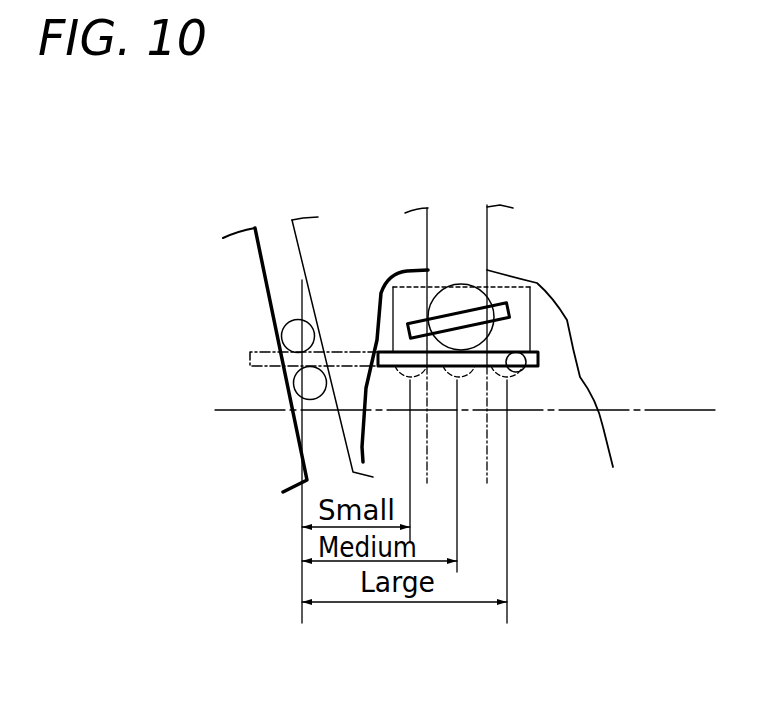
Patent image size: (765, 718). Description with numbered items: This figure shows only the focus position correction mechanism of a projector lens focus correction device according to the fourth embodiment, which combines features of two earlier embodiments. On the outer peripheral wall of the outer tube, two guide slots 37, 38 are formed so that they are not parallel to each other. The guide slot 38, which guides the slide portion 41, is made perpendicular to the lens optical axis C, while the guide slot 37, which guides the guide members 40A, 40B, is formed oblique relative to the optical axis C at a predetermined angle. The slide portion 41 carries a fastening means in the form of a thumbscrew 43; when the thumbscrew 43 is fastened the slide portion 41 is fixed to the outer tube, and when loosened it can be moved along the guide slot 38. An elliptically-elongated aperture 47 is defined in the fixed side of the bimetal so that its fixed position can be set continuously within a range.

The guide slot 37 is at (273, 220).
The guide slot 38 is at (460, 210).
The thumbscrew 43 is at (447, 293).
The slide portion 41 is at (517, 302).
The guide member 40A is at (290, 328).
The guide member 40B is at (292, 390).
The elliptically-elongated aperture 47 is at (512, 378).
The lens optical axis C is at (682, 412).